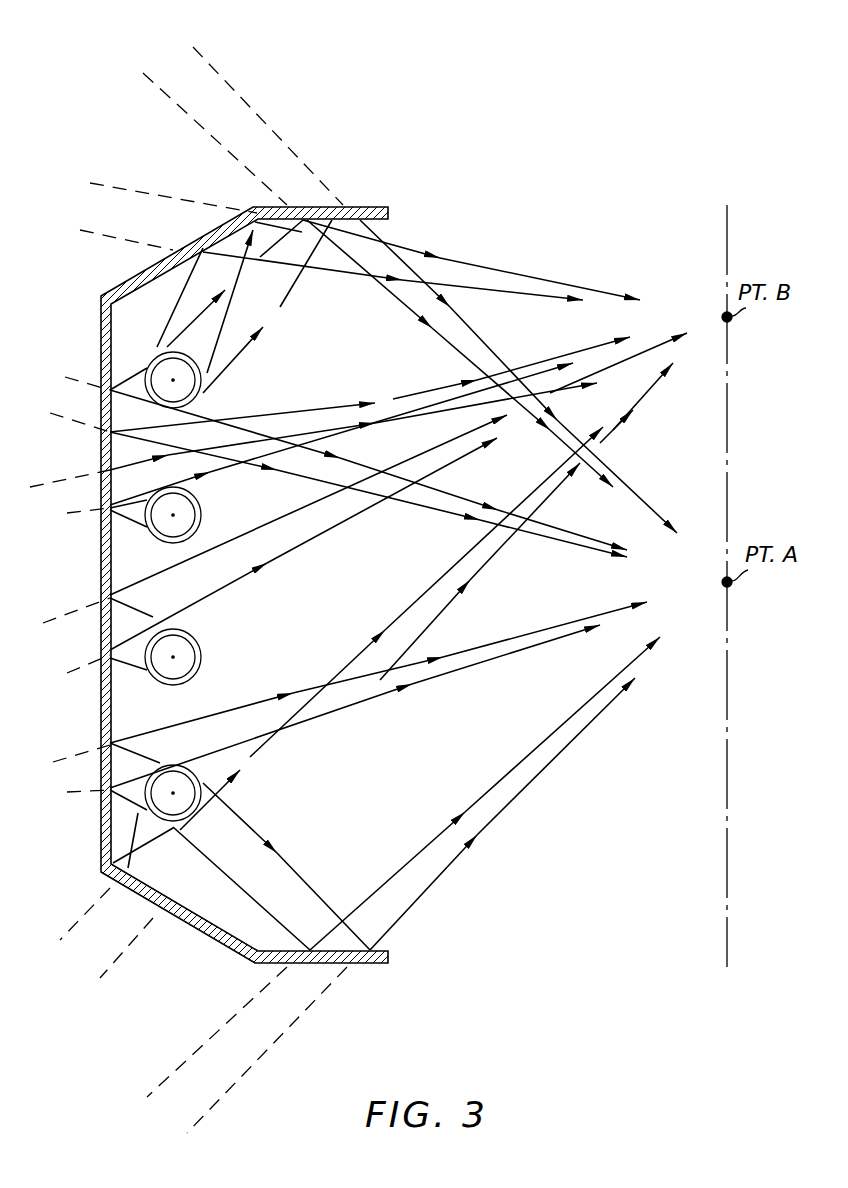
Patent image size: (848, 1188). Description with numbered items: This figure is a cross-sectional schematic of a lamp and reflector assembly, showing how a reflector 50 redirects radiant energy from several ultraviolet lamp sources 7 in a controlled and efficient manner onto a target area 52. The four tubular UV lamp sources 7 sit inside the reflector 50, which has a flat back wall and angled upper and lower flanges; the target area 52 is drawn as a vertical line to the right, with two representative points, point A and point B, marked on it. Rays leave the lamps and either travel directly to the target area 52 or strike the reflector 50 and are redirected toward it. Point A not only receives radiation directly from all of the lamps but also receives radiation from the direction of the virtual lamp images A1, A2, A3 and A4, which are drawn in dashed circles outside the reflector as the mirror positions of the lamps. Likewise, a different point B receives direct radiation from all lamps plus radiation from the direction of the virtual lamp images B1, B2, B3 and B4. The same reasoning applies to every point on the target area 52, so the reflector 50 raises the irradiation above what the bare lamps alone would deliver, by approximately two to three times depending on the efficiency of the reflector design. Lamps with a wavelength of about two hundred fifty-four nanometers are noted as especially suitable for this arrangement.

The reflector 50 is at (100, 318).
The UV lamp sources 7 is at (200, 398).
The target area 52 is at (730, 212).
The virtual lamp image A1 is at (234, 111).
The virtual lamp image B1 is at (147, 215).
The virtual lamp image A2 is at (59, 392).
The virtual lamp image B2 is at (59, 506).
The virtual lamp image B3 is at (59, 640).
The virtual lamp image A3 is at (59, 783).
The virtual lamp image B4 is at (95, 944).
The virtual lamp image A4 is at (238, 1061).